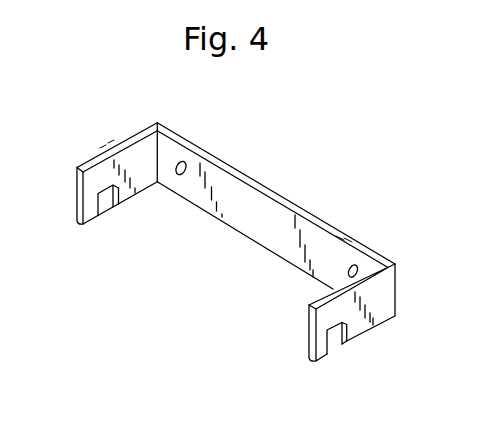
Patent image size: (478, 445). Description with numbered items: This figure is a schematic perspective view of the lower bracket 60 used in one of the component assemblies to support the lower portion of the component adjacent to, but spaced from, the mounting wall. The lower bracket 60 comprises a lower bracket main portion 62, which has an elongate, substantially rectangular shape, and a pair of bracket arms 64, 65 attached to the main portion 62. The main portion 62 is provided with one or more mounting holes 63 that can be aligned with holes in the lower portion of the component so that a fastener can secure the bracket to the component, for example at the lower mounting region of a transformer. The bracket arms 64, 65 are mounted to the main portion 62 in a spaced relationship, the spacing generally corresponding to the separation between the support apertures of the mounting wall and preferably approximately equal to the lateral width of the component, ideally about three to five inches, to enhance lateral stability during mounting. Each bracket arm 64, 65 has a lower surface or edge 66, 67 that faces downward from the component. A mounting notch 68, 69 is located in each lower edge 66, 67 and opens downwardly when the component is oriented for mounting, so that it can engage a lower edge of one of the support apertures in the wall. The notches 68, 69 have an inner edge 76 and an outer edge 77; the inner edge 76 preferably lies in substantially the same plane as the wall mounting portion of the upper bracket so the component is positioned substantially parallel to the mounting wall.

The lower bracket 60 is at (271, 192).
The lower bracket main portion 62 is at (253, 227).
The mounting hole 63 is at (184, 166).
The bracket arm 64 is at (140, 160).
The bracket arm 65 is at (397, 272).
The lower edge 66 is at (396, 317).
The lower edge 67 is at (136, 198).
The mounting notch 68 is at (100, 205).
The mounting notch 69 is at (322, 334).
The inner edge 76 is at (348, 343).
The outer edge 77 is at (332, 350).